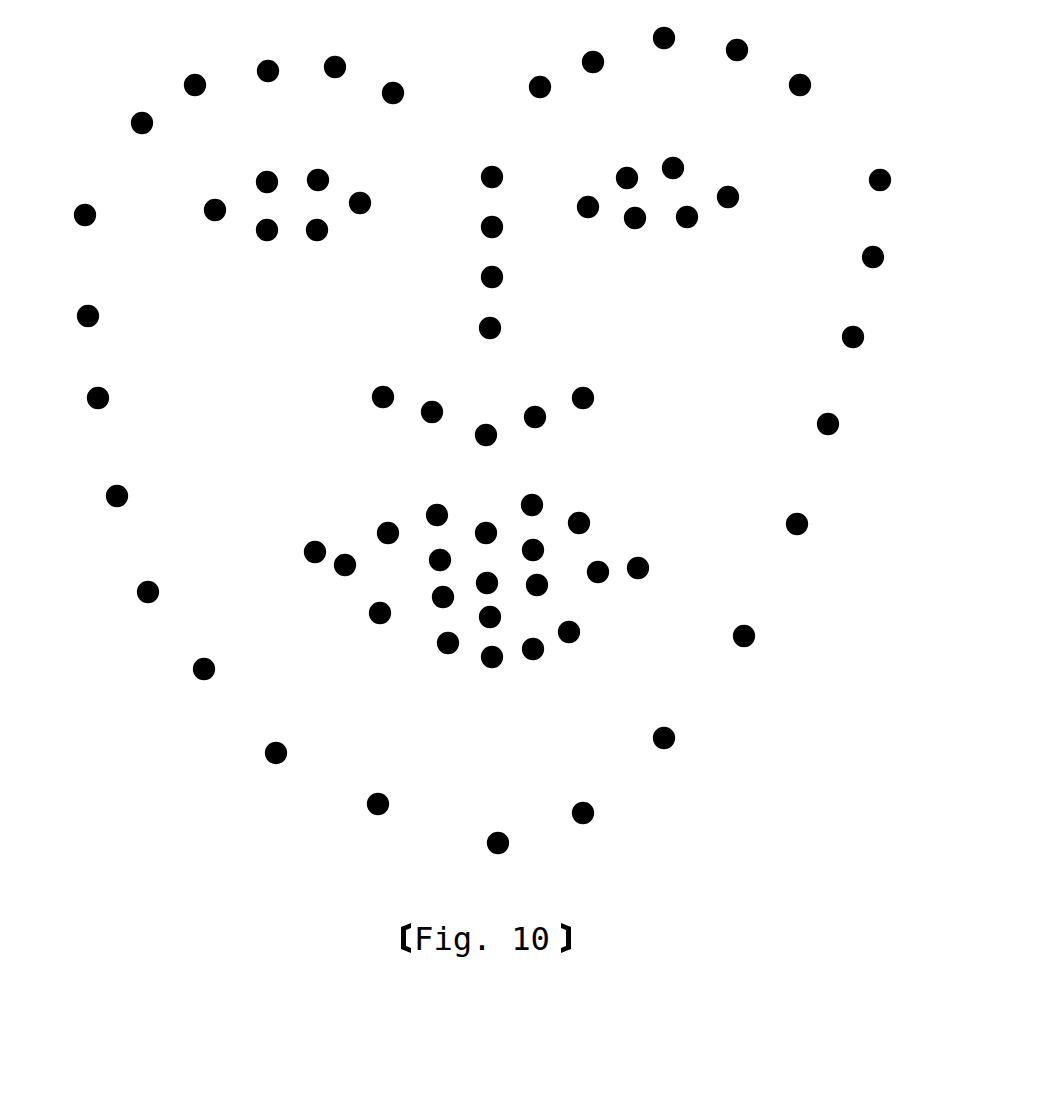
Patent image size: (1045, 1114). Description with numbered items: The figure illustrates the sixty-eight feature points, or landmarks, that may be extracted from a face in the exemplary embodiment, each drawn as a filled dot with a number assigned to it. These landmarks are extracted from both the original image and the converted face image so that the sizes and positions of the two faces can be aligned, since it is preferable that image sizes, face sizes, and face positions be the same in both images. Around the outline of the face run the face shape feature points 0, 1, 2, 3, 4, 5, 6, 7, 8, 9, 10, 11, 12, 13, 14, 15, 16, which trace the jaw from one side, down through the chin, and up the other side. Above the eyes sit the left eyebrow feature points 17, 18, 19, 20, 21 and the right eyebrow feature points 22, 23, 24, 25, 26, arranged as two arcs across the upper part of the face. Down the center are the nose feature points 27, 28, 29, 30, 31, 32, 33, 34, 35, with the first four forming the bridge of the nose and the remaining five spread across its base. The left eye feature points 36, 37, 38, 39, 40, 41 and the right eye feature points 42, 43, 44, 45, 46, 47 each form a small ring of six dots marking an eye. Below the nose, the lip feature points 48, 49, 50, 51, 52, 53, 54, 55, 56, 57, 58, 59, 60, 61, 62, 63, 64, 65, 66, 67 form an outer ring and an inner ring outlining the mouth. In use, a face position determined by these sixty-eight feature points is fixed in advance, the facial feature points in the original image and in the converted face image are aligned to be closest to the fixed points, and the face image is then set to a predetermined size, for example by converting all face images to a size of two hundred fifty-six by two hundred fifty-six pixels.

The face shape feature point 0 is at (66, 219).
The face shape feature point 1 is at (70, 320).
The face shape feature point 2 is at (80, 402).
The face shape feature point 3 is at (99, 500).
The face shape feature point 4 is at (130, 596).
The face shape feature point 5 is at (186, 673).
The face shape feature point 6 is at (258, 757).
The face shape feature point 7 is at (360, 808).
The face shape feature point 8 is at (480, 847).
The face shape feature point 9 is at (602, 813).
The face shape feature point 10 is at (687, 738).
The face shape feature point 11 is at (767, 636).
The face shape feature point 12 is at (821, 524).
The face shape feature point 13 is at (852, 424).
The face shape feature point 14 is at (876, 337).
The face shape feature point 15 is at (897, 257).
The face shape feature point 16 is at (903, 180).
The left eyebrow feature point 17 is at (142, 108).
The left eyebrow feature point 18 is at (195, 70).
The left eyebrow feature point 19 is at (268, 56).
The left eyebrow feature point 20 is at (335, 52).
The left eyebrow feature point 21 is at (393, 78).
The right eyebrow feature point 22 is at (540, 72).
The right eyebrow feature point 23 is at (593, 47).
The right eyebrow feature point 24 is at (664, 24).
The right eyebrow feature point 25 is at (737, 35).
The right eyebrow feature point 26 is at (800, 70).
The nose feature point 27 is at (511, 177).
The nose feature point 28 is at (511, 227).
The nose feature point 29 is at (511, 277).
The nose feature point 30 is at (509, 328).
The nose feature point 31 is at (383, 382).
The nose feature point 32 is at (432, 397).
The nose feature point 33 is at (486, 420).
The nose feature point 34 is at (535, 402).
The nose feature point 35 is at (583, 383).
The left eye feature point 36 is at (215, 195).
The left eye feature point 37 is at (267, 167).
The left eye feature point 38 is at (318, 165).
The left eye feature point 39 is at (380, 203).
The left eye feature point 40 is at (317, 250).
The left eye feature point 41 is at (267, 250).
The right eye feature point 42 is at (588, 228).
The right eye feature point 43 is at (627, 163).
The right eye feature point 44 is at (673, 153).
The right eye feature point 45 is at (748, 197).
The right eye feature point 46 is at (687, 238).
The right eye feature point 47 is at (635, 239).
The lip feature point 48 is at (315, 537).
The lip feature point 49 is at (388, 518).
The lip feature point 50 is at (437, 500).
The lip feature point 51 is at (486, 518).
The lip feature point 52 is at (532, 490).
The lip feature point 53 is at (579, 508).
The lip feature point 54 is at (638, 553).
The lip feature point 55 is at (569, 649).
The lip feature point 56 is at (533, 667).
The lip feature point 57 is at (492, 674).
The lip feature point 58 is at (448, 661).
The lip feature point 59 is at (380, 634).
The lip feature point 60 is at (345, 581).
The lip feature point 61 is at (421, 559).
The lip feature point 62 is at (487, 567).
The lip feature point 63 is at (550, 550).
The lip feature point 64 is at (598, 557).
The lip feature point 65 is at (555, 585).
The lip feature point 66 is at (509, 617).
The lip feature point 67 is at (424, 595).